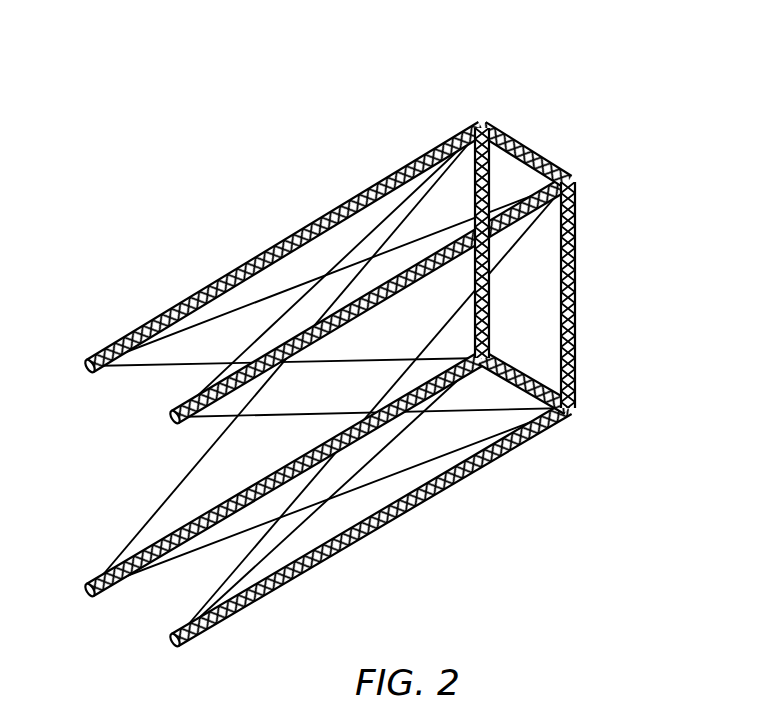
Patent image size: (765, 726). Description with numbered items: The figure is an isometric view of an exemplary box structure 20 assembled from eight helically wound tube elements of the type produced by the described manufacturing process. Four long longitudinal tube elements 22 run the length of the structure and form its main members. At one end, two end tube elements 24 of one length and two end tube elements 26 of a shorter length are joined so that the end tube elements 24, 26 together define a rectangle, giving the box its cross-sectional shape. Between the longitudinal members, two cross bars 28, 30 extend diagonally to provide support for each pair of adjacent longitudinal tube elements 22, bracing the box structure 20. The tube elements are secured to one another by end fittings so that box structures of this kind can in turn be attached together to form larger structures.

The box structure 20 is at (560, 70).
The longitudinal tube element 22 is at (352, 198).
The end tube element 24 is at (476, 184).
The end tube element 26 is at (538, 157).
The cross bar 28 is at (268, 298).
The cross bar 30 is at (243, 347).